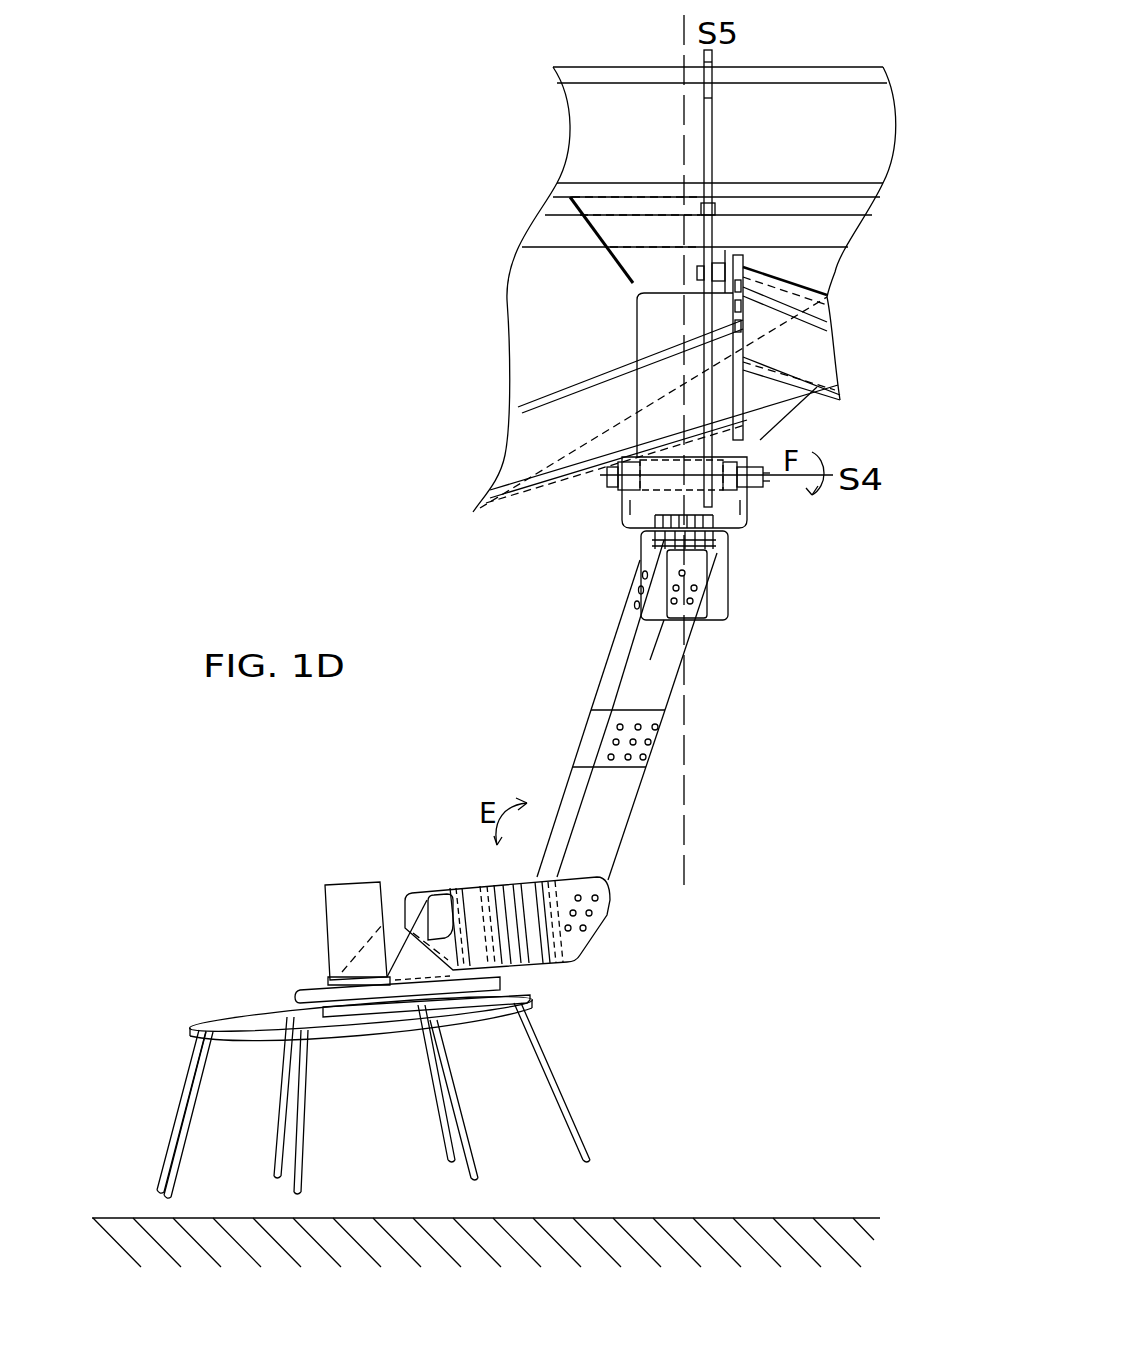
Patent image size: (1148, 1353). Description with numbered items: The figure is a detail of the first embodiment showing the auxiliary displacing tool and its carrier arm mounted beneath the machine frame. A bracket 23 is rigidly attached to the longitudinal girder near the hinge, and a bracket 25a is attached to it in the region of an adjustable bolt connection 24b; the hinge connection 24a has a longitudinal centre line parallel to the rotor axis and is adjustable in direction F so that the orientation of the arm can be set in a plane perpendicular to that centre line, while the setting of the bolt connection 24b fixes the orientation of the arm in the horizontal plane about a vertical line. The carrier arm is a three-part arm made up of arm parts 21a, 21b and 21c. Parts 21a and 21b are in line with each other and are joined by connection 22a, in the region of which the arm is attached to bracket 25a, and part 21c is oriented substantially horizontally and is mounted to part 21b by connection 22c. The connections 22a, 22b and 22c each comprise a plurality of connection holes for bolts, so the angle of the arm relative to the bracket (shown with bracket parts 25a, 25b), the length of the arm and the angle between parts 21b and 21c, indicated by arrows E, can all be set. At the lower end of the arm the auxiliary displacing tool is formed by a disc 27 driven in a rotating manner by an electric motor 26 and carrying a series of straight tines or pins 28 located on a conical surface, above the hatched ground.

The arm part 21a is at (657, 673).
The arm part 21b is at (612, 815).
The arm part 21c is at (520, 942).
The connection 22a is at (642, 573).
The connection 22b is at (633, 742).
The connection 22c is at (589, 913).
The bracket 23 is at (665, 307).
The hinge connection 24a is at (725, 482).
The adjustable bolt connection 24b is at (620, 523).
The bracket 25a is at (713, 598).
The bracket plate 25b is at (620, 495).
The electric motor 26 is at (348, 900).
The disc 27 is at (247, 1020).
The tines 28 is at (180, 1117).